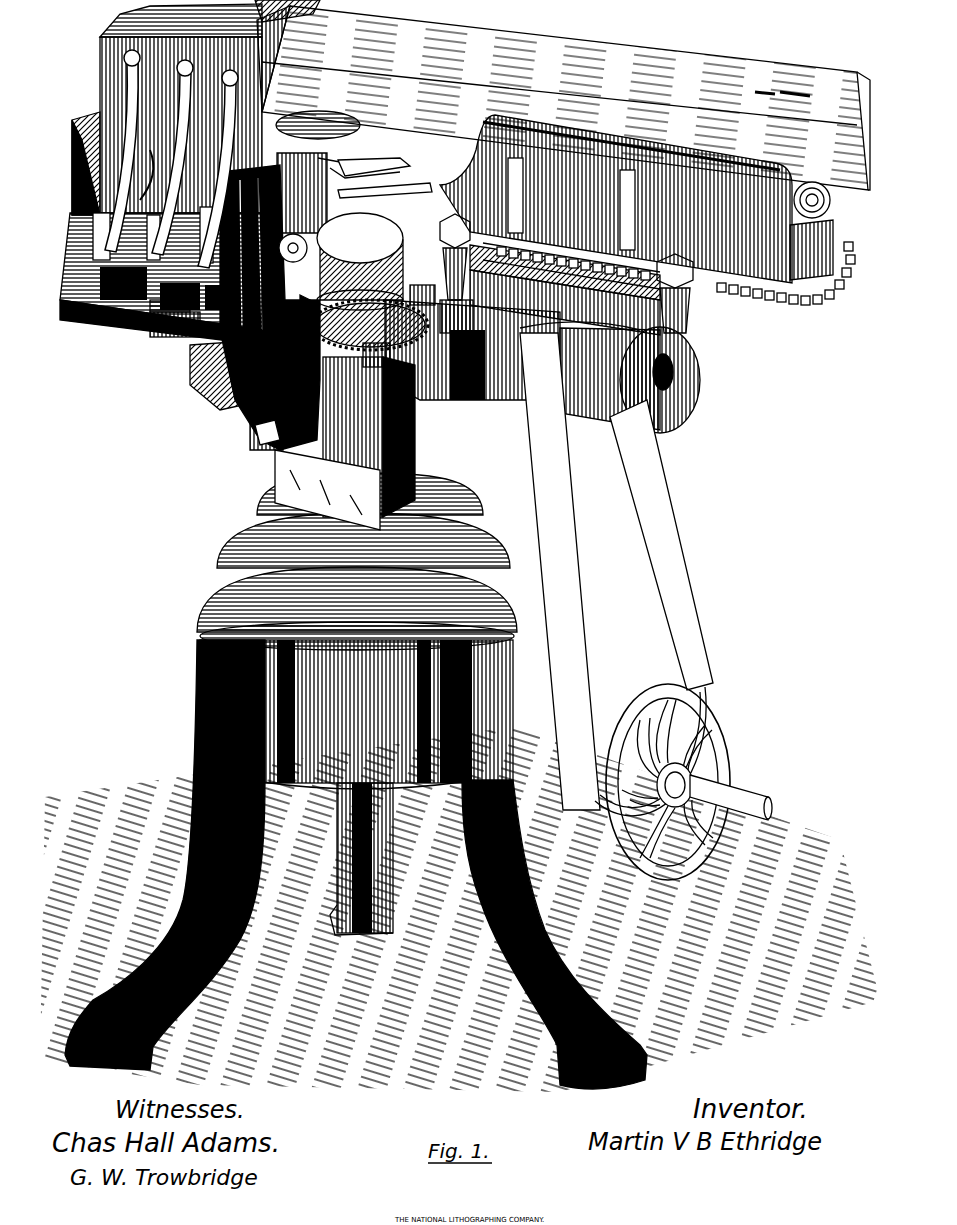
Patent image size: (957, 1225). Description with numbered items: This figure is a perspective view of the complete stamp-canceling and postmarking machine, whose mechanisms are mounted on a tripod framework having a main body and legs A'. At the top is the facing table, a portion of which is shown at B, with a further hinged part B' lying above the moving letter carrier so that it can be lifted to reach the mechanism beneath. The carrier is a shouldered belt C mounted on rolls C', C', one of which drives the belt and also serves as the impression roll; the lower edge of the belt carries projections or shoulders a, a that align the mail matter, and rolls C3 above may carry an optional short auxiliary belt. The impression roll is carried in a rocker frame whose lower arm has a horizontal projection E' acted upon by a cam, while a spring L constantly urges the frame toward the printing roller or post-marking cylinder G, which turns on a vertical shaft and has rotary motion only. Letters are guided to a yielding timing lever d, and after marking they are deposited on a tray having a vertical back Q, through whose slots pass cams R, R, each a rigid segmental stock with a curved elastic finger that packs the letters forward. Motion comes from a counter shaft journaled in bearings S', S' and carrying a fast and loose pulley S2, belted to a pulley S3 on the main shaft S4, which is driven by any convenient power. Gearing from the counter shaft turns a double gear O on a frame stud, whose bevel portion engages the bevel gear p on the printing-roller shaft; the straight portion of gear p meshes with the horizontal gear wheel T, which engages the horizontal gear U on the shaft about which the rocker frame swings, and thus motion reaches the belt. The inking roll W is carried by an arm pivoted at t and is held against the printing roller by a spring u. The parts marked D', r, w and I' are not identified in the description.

The vertical back of table Q is at (175, 174).
The levers D' is at (171, 159).
The cams R is at (156, 175).
The printing roller G is at (265, 307).
The rolls C3 is at (325, 132).
The timing lever d is at (364, 168).
The pivot t is at (385, 198).
The bearings S' is at (360, 261).
The inking roll W is at (535, 273).
The disc with hole r is at (293, 252).
The spring u is at (310, 300).
The gear w is at (370, 325).
The gear wheel T is at (385, 340).
The horizontal gear U is at (422, 295).
The plate I' is at (166, 332).
The double gear O is at (207, 361).
The spring L is at (246, 425).
The bevel gear p is at (255, 436).
The facing table portion B is at (562, 95).
The hinged table part B' is at (559, 93).
The horizontal projection E' is at (616, 199).
The shoulders a is at (669, 276).
The belt rolls C' is at (822, 200).
The belt C is at (819, 249).
The fast and loose pulley S2 is at (610, 388).
The pulley S3 is at (668, 782).
The main shaft S4 is at (731, 797).
The legs A' is at (356, 781).